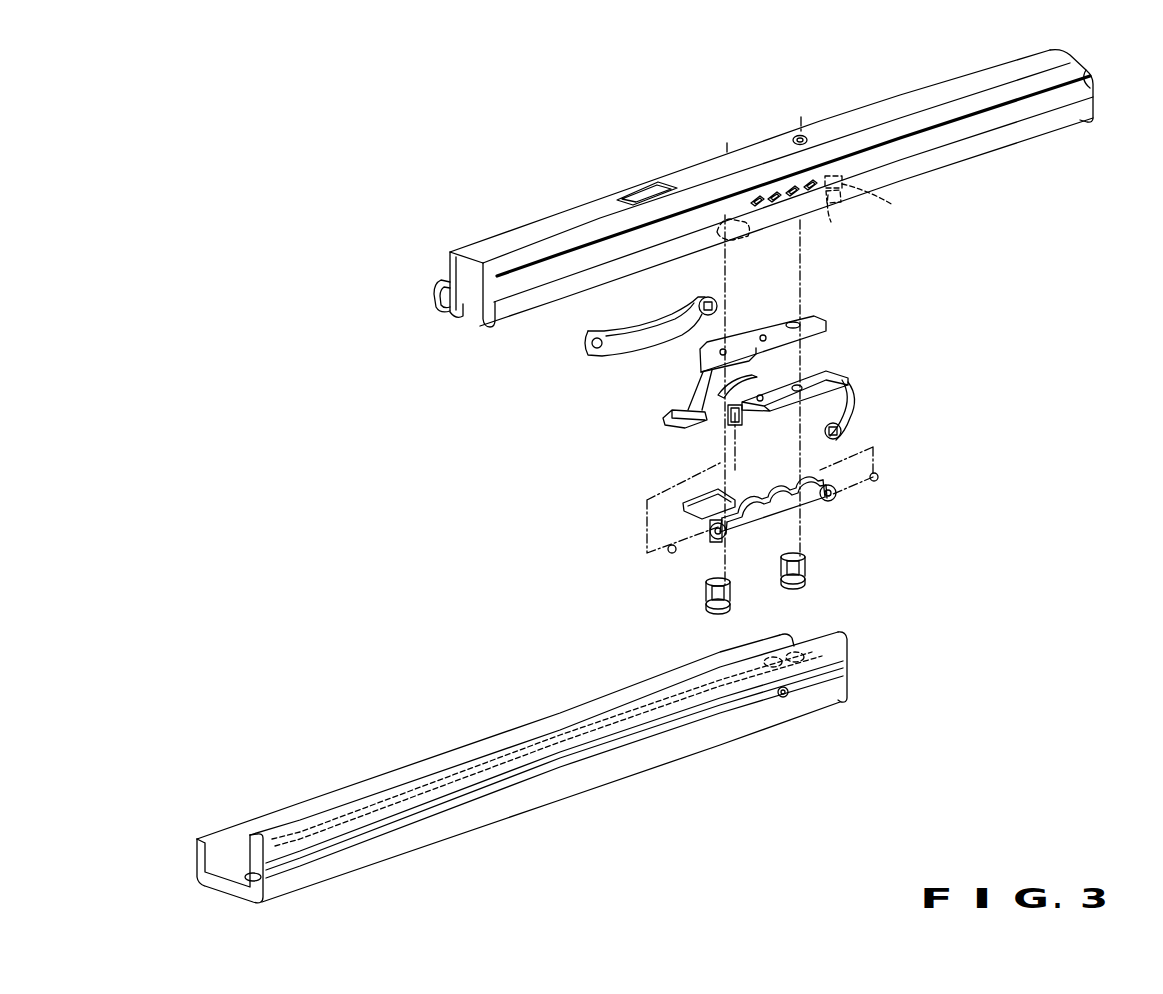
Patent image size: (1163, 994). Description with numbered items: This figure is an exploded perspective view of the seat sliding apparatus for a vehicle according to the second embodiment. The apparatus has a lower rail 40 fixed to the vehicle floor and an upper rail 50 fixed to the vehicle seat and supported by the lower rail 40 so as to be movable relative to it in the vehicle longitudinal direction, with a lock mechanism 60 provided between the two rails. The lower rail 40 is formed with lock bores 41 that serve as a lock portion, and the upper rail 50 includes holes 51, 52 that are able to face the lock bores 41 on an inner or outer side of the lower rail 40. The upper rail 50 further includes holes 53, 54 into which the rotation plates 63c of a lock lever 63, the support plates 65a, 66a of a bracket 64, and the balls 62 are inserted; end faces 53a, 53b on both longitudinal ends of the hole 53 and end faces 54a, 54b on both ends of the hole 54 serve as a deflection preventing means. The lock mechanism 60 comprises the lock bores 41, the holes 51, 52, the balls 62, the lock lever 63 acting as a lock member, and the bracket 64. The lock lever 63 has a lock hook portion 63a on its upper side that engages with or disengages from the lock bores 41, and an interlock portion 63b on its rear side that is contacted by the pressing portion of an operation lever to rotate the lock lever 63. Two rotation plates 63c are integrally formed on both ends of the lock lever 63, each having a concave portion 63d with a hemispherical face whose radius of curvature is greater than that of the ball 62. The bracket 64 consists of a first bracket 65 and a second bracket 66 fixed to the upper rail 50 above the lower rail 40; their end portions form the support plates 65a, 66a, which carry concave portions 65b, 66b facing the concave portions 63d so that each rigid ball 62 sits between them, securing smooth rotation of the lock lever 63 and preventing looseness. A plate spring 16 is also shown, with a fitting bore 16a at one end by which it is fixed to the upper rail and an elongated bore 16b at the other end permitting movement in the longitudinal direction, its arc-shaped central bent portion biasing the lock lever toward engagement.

The plate spring 16 is at (650, 348).
The fitting bore 16a is at (588, 346).
The elongated bore 16b is at (717, 302).
The lower rail 40 is at (807, 707).
The lock bores 41 is at (808, 660).
The upper rail 50 is at (1057, 62).
The hole 51 is at (795, 186).
The hole 52 is at (826, 181).
The hole 53 is at (739, 254).
The end face 53a is at (717, 233).
The end face 53b is at (748, 233).
The hole 54 is at (838, 200).
The end face 54a is at (835, 227).
The end face 54b is at (896, 203).
The lock mechanism 60 is at (1037, 373).
The ball 62 is at (879, 477).
The lock lever 63 is at (841, 558).
The lock hook portion 63a is at (730, 490).
The interlock portion 63b is at (702, 502).
The rotation plate 63c is at (730, 540).
The concave portion 63d is at (713, 535).
The bracket 64 is at (883, 302).
The first bracket 65 is at (782, 328).
The support plate 65a is at (722, 388).
The concave portion 65b is at (729, 420).
The second bracket 66 is at (818, 380).
The support plate 66a is at (853, 397).
The concave portion 66b is at (848, 443).